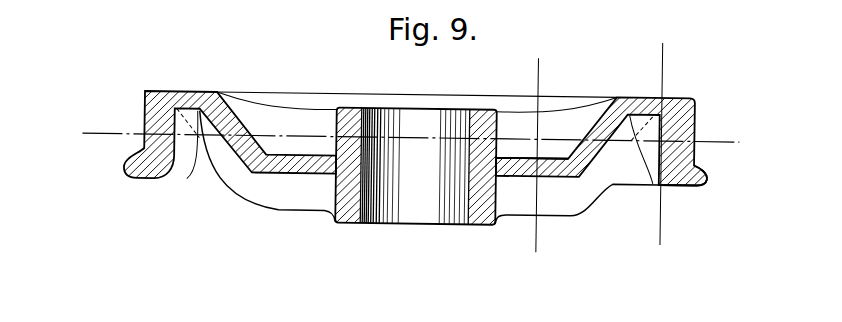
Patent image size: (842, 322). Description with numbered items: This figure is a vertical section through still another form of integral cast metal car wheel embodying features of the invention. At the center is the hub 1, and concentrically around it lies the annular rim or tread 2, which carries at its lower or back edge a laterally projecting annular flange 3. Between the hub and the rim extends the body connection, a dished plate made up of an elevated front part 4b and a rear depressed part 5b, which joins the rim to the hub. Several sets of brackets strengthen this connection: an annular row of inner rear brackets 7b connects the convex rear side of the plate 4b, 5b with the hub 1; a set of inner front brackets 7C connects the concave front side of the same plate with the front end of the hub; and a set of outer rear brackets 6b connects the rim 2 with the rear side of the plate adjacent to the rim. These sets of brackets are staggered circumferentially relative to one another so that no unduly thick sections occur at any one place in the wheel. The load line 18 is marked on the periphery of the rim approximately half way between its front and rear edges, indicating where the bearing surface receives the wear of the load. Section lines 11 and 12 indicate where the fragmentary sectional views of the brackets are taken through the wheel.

The hub 1 is at (334, 220).
The rim 2 is at (695, 110).
The flange 3 is at (708, 170).
The elevated front part of plate 4b is at (642, 91).
The rear depressed part of plate 5b is at (517, 153).
The outer rear brackets 6b is at (657, 163).
The inner rear brackets 7b is at (422, 168).
The inner front brackets 7C is at (292, 128).
The section line 11- 11 is at (545, 248).
The section line 12- 12 is at (669, 239).
The load line 18 is at (410, 140).